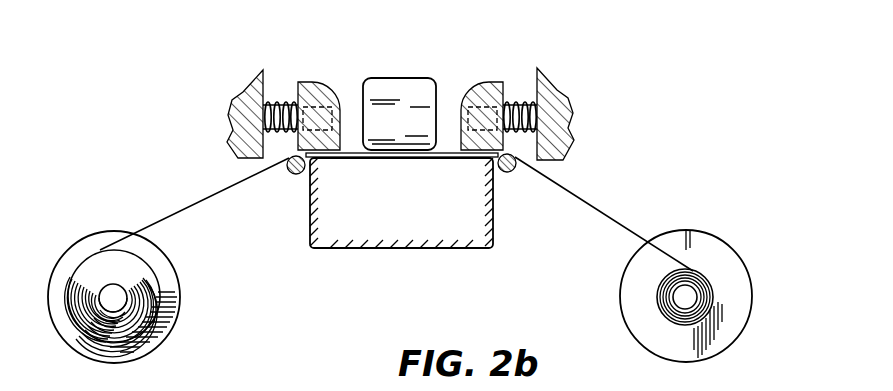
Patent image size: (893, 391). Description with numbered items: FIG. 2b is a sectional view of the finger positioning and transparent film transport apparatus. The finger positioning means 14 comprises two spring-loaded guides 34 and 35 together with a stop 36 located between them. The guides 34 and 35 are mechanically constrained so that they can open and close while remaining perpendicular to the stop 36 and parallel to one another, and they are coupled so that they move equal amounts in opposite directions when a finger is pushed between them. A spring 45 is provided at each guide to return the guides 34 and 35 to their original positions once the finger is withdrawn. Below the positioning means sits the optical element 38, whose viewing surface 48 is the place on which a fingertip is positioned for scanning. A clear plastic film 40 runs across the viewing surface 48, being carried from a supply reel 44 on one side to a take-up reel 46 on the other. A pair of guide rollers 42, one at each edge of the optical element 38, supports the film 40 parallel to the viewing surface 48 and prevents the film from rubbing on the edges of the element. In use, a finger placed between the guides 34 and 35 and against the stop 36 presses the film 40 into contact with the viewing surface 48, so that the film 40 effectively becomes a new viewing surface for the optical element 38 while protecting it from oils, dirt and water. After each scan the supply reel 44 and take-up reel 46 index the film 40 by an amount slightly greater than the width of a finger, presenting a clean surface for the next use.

The finger positioning means 14 is at (560, 62).
The spring-loaded guide 34 is at (312, 94).
The spring-loaded guide 35 is at (490, 92).
The stop 36 is at (418, 92).
The optical element 38 is at (437, 222).
The clear plastic film 40 is at (180, 211).
The guide rollers 42 is at (290, 176).
The supply reel 44 is at (86, 240).
The spring 45 is at (284, 100).
The take-up reel 46 is at (723, 246).
The viewing surface 48 is at (358, 153).